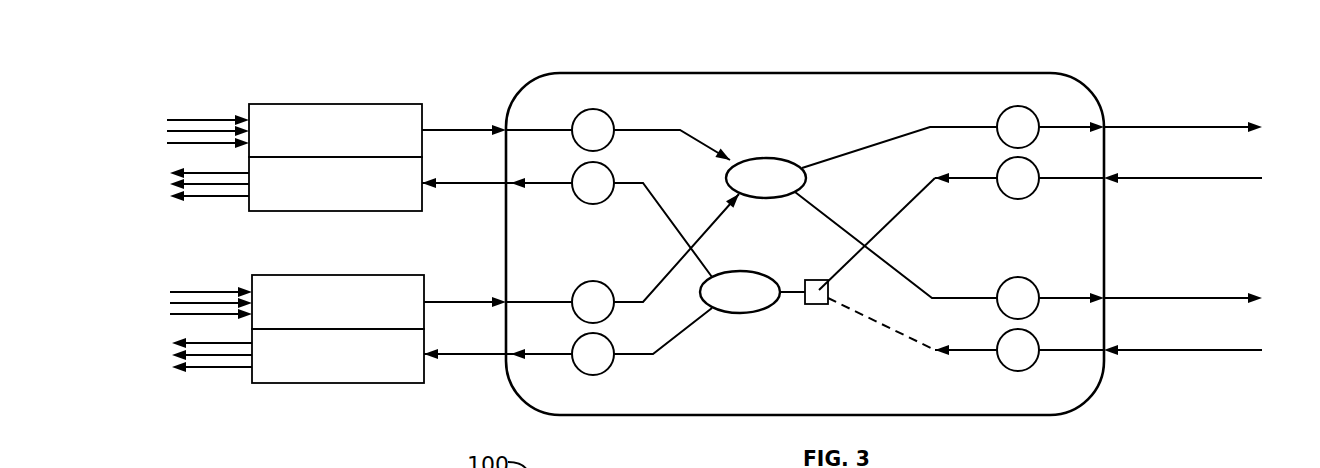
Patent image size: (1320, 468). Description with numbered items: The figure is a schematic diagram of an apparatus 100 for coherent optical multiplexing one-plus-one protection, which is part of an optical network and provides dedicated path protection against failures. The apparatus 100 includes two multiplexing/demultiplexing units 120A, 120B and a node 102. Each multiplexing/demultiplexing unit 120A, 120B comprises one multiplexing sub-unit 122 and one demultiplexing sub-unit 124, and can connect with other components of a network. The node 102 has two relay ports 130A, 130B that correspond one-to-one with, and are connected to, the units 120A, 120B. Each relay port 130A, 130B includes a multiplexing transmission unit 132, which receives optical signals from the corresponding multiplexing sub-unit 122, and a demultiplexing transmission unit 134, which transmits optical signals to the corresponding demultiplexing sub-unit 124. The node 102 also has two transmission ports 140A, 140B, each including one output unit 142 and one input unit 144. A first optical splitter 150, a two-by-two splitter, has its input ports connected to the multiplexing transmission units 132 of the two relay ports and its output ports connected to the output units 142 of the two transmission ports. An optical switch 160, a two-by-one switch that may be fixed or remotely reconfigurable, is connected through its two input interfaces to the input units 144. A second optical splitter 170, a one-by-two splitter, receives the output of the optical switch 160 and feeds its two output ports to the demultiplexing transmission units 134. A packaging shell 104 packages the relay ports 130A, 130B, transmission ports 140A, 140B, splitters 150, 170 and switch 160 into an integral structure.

The apparatus 100 is at (550, 60).
The node 102 is at (597, 416).
The packaging shell 104 is at (796, 111).
The multiplexing/demultiplexing unit 120A is at (228, 86).
The multiplexing/demultiplexing unit 120B is at (228, 268).
The multiplexing sub-unit 122 is at (327, 104).
The demultiplexing sub-unit 124 is at (327, 211).
The relay port 130A is at (506, 125).
The relay port 130B is at (506, 288).
The multiplexing transmission unit 132 is at (593, 109).
The demultiplexing transmission unit 134 is at (593, 204).
The transmission port 140A is at (1104, 112).
The transmission port 140B is at (1104, 365).
The output unit 142 is at (1018, 106).
The input unit 144 is at (1018, 199).
The first optical splitter 150 is at (765, 199).
The optical switch 160 is at (812, 306).
The second optical splitter 170 is at (731, 314).